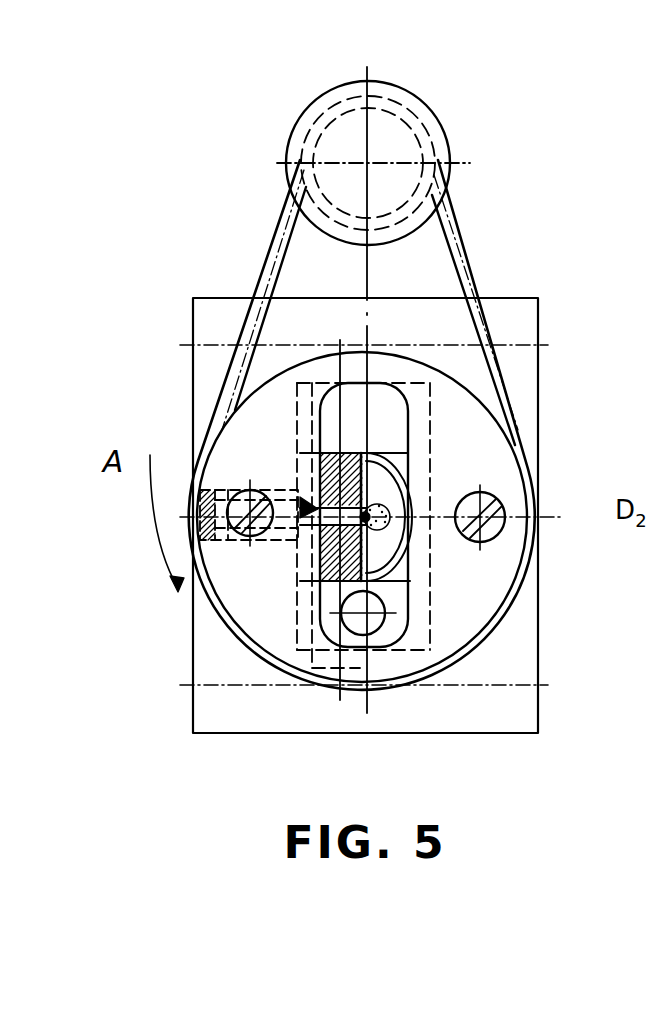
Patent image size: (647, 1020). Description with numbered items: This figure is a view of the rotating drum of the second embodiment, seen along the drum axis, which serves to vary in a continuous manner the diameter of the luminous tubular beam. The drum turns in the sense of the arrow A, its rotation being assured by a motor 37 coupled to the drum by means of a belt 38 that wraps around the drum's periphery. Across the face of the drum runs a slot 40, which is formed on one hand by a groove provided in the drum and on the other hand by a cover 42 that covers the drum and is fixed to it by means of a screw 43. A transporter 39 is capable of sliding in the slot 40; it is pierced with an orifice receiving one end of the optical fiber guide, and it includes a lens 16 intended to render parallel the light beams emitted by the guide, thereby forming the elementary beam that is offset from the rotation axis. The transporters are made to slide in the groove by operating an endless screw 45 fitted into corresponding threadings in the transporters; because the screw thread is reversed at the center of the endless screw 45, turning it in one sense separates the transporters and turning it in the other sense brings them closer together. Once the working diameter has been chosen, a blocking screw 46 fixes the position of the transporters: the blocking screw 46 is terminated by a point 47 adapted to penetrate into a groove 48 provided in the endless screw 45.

The lens 16 is at (371, 621).
The motor 37 is at (432, 112).
The belt 38 is at (460, 250).
The transporter 39 is at (413, 630).
The slot 40 is at (420, 558).
The cover 42 is at (440, 412).
The screw 43 is at (492, 492).
The endless screw 45 is at (322, 352).
The blocking screw 46 is at (290, 492).
The point 47 is at (300, 542).
The groove 48 is at (384, 508).